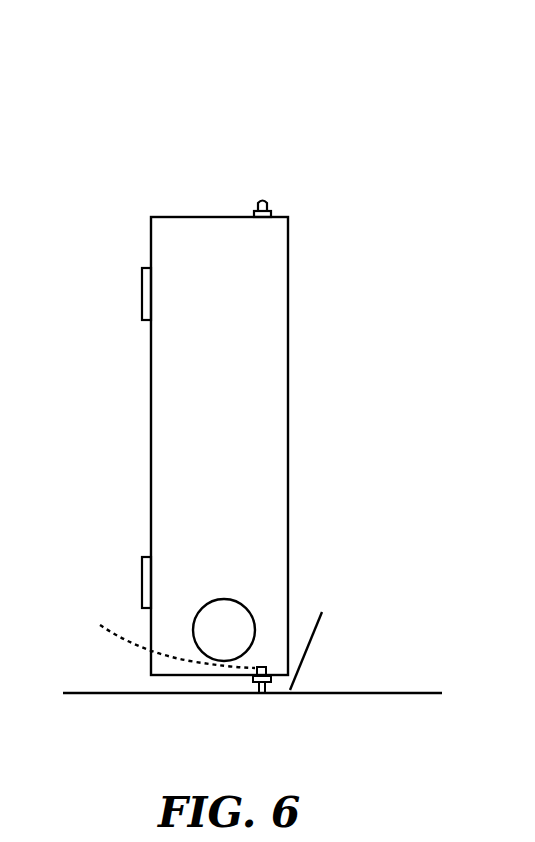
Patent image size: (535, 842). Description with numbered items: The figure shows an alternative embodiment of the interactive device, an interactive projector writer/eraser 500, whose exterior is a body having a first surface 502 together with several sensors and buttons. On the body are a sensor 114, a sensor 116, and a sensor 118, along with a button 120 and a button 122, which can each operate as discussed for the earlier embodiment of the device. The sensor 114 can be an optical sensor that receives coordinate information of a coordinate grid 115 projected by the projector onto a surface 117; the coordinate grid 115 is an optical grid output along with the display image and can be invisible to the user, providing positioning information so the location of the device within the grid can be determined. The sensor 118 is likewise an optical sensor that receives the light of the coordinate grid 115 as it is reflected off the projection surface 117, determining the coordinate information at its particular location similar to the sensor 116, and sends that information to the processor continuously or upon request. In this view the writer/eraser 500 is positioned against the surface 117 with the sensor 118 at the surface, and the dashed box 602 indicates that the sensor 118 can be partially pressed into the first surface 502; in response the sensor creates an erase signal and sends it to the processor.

The interactive projector writer/eraser 500 is at (303, 132).
The first surface 502 is at (270, 268).
The sensor 116 is at (267, 199).
The button 122 is at (142, 283).
The button 120 is at (142, 590).
The sensor 114 is at (232, 602).
The coordinate grid 115 is at (273, 691).
The surface 117 is at (366, 693).
The sensor 118 is at (256, 688).
The dashed box 602 is at (157, 640).